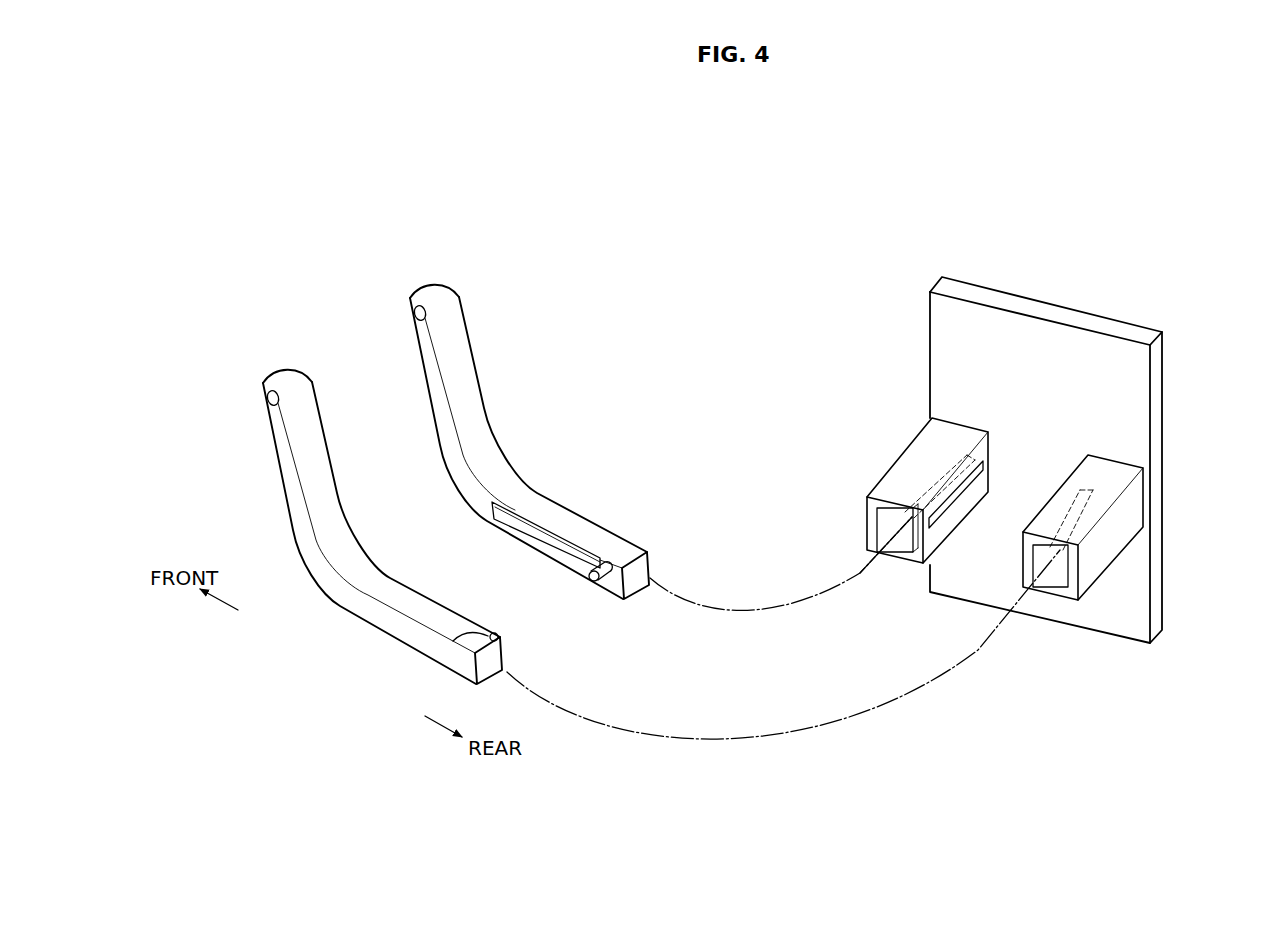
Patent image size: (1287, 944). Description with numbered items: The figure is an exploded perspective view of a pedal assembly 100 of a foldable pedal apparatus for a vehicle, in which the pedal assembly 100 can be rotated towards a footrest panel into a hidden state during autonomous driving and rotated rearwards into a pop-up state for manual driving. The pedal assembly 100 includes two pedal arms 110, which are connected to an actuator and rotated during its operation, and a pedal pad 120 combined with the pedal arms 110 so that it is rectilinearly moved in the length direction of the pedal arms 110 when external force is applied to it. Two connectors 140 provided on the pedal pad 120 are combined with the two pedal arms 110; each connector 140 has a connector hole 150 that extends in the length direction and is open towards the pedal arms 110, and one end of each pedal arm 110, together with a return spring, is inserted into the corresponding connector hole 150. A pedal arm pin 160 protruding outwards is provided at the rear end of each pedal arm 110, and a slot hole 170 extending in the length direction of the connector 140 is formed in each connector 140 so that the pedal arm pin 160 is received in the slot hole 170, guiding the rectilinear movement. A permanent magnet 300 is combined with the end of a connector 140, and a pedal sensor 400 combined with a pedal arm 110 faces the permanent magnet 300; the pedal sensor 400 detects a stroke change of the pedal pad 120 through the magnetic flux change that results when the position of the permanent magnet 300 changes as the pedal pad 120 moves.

The pedal assembly 100 is at (1078, 426).
The pedal arm 110 is at (290, 380).
The pedal pad 120 is at (1055, 338).
The connector 140 is at (918, 460).
The connector hole 150 is at (888, 523).
The pedal arm pin 160 is at (602, 565).
The slot hole 170 is at (982, 475).
The permanent magnet 300 is at (915, 567).
The pedal sensor 400 is at (523, 525).